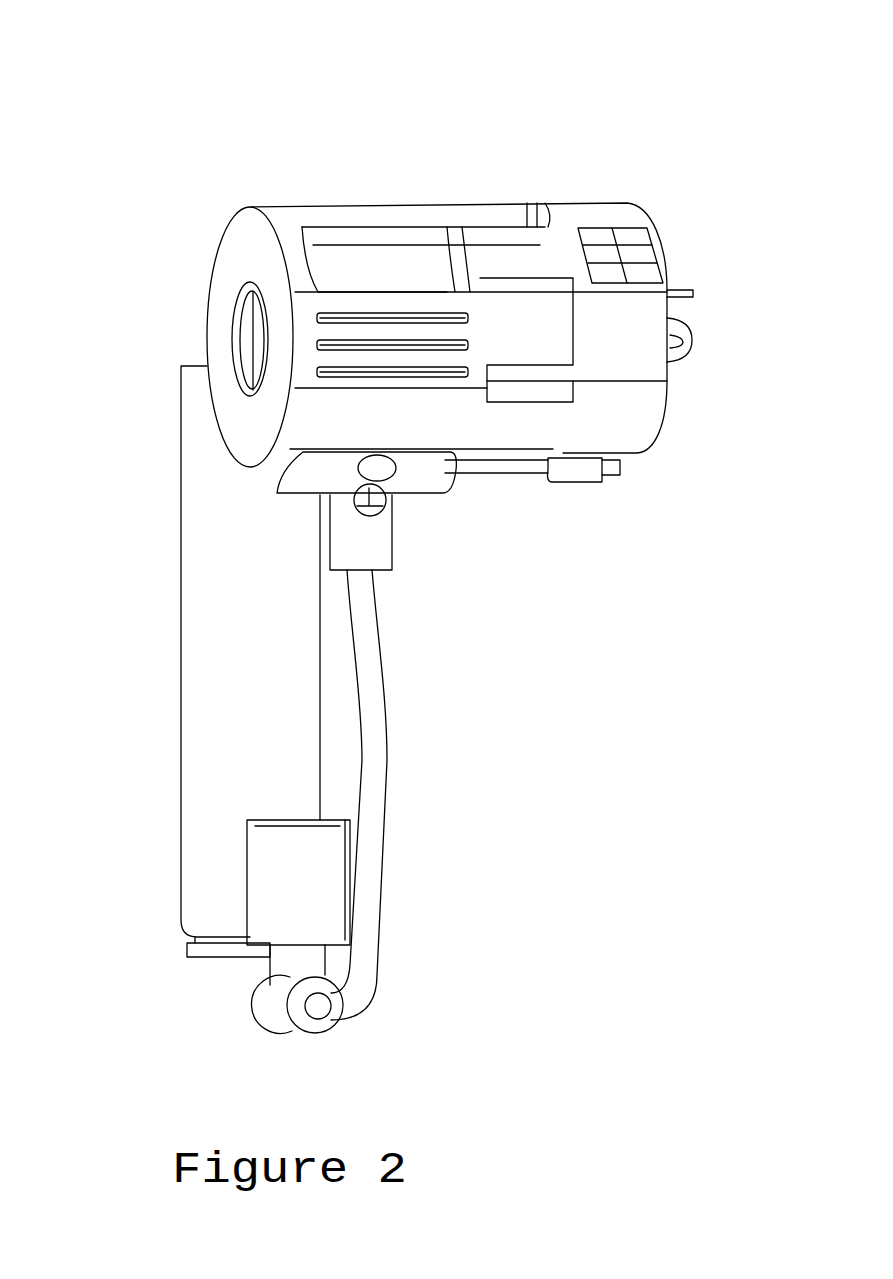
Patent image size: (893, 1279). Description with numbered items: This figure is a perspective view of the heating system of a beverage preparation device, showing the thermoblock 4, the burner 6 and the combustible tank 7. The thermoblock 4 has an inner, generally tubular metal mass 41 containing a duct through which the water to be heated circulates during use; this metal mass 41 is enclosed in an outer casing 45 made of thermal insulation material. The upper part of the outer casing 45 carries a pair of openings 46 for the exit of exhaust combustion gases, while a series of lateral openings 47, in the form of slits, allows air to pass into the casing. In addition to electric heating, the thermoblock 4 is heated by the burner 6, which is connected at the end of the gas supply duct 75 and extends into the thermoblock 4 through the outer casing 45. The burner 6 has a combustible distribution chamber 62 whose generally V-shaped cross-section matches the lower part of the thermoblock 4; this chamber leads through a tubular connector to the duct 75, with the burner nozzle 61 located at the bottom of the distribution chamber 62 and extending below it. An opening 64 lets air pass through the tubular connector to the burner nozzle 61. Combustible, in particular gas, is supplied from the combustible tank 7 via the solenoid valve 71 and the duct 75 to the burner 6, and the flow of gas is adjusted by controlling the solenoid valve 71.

The thermoblock 4 is at (607, 148).
The outer casing 45 is at (215, 287).
The openings 46 is at (398, 262).
The metal mass 41 is at (382, 274).
The lateral openings 47 is at (420, 347).
The combustible distribution chamber 62 is at (320, 473).
The opening 64 is at (387, 495).
The burner nozzle 61 is at (370, 520).
The burner 6 is at (440, 542).
The combustible tank 7 is at (248, 677).
The solenoid valve 71 is at (287, 865).
The duct 75 is at (370, 860).